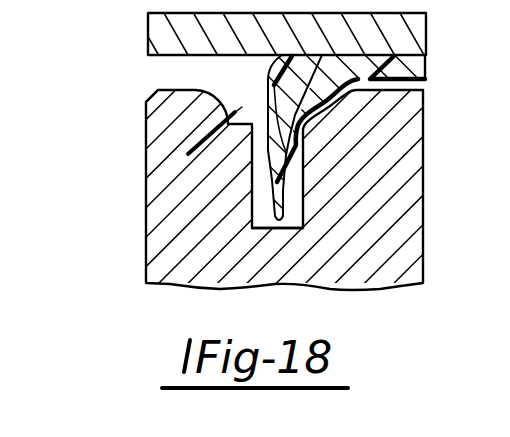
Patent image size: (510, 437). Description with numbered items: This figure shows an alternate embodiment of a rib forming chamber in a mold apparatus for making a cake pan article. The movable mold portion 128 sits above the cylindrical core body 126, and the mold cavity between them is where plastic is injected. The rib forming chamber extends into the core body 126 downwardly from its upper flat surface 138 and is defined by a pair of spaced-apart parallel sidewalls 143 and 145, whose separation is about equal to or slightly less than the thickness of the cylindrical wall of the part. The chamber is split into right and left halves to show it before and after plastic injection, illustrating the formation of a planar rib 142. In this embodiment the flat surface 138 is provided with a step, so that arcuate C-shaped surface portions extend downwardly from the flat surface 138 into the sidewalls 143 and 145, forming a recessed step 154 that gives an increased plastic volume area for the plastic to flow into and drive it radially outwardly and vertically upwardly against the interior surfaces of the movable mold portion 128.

The movable mold portion 128 is at (166, 25).
The upper flat surface 138 is at (162, 91).
The cylindrical core body 126 is at (162, 127).
The recessed step 154 is at (190, 153).
The sidewall 143 is at (256, 213).
The planar rib 142 is at (287, 183).
The sidewall 145 is at (292, 216).